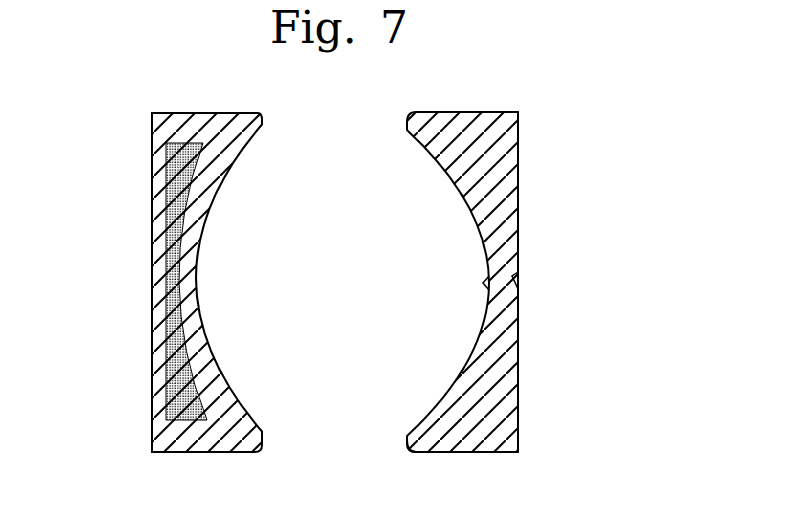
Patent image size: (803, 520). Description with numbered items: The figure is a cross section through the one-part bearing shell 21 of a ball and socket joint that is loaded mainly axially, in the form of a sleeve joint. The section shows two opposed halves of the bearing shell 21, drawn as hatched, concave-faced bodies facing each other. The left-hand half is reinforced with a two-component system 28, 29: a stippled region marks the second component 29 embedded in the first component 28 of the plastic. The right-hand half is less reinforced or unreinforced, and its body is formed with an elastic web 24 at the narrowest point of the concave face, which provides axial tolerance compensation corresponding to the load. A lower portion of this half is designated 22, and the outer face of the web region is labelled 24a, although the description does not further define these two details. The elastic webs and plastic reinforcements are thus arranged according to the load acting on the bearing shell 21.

The bearing shell 21 is at (525, 143).
The lower flange portion of rim 22 is at (520, 392).
The elastic web 24 is at (514, 283).
The outer surface of rim 24a is at (522, 280).
The two-component system 28 is at (152, 290).
The two-component system 29 is at (165, 170).